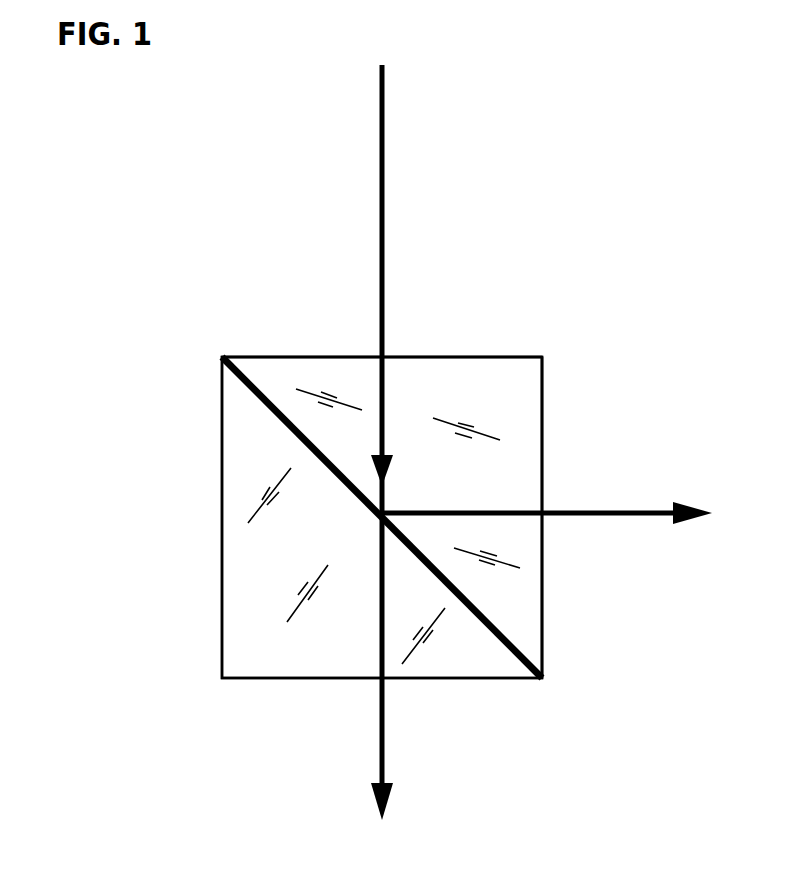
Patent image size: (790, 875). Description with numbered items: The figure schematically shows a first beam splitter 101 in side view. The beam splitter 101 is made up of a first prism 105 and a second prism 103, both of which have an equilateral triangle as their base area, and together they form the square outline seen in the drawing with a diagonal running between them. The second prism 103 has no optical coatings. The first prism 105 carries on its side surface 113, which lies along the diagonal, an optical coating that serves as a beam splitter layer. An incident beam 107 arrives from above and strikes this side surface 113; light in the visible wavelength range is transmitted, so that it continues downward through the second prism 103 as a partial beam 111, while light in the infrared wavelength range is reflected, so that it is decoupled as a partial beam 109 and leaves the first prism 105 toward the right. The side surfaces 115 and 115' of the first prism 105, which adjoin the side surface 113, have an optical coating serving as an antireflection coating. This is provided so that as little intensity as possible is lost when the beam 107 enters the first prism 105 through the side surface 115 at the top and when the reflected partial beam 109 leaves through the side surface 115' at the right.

The first beam splitter 101 is at (180, 239).
The second prism 103 is at (220, 526).
The first prism 105 is at (305, 355).
The incident beam 107 is at (385, 187).
The partial beam 109 is at (603, 512).
The partial beam 111 is at (378, 736).
The side surface 113 is at (475, 598).
The side surface 115 is at (464, 307).
The side surface 115' is at (601, 512).